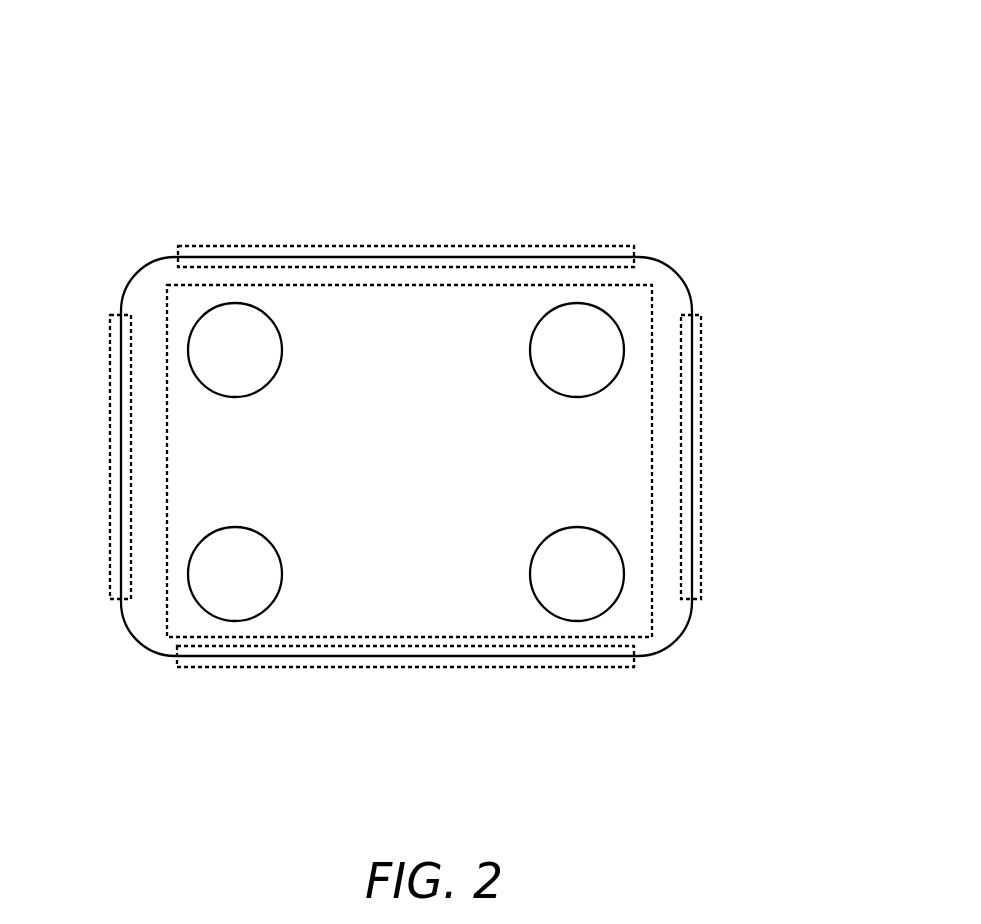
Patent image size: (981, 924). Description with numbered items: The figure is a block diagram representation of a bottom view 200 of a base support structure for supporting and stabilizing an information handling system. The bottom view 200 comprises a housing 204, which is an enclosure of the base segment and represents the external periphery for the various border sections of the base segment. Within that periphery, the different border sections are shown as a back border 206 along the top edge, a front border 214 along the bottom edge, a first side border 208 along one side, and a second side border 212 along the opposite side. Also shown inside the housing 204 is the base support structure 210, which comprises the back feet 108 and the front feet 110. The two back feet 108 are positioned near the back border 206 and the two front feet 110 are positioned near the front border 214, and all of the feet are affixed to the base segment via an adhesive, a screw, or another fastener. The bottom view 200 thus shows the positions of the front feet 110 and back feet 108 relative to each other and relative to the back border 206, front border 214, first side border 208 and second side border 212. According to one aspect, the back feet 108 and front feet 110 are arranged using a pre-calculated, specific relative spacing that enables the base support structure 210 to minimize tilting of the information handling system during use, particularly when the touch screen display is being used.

The bottom view 200 is at (217, 68).
The housing 204 is at (117, 321).
The back border 206 is at (404, 240).
The first side border 208 is at (39, 489).
The base support structure 210 is at (419, 362).
The second side border 212 is at (790, 490).
The front border 214 is at (412, 726).
The back feet 108 is at (291, 381).
The front feet 110 is at (291, 552).